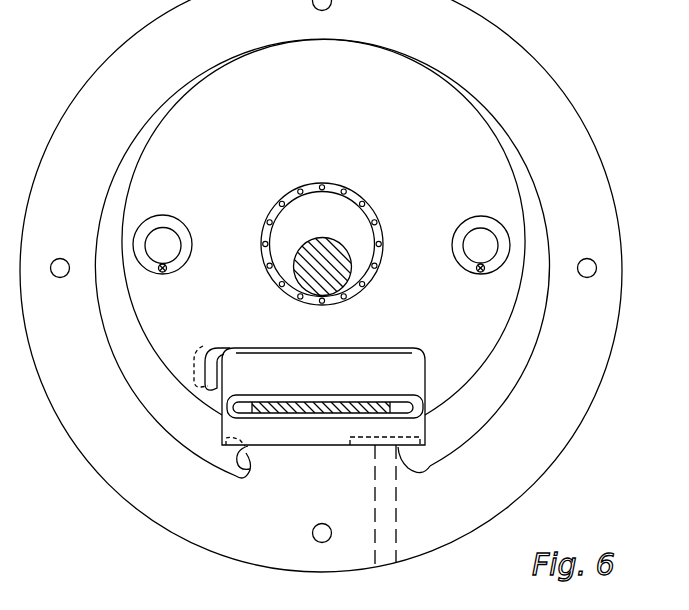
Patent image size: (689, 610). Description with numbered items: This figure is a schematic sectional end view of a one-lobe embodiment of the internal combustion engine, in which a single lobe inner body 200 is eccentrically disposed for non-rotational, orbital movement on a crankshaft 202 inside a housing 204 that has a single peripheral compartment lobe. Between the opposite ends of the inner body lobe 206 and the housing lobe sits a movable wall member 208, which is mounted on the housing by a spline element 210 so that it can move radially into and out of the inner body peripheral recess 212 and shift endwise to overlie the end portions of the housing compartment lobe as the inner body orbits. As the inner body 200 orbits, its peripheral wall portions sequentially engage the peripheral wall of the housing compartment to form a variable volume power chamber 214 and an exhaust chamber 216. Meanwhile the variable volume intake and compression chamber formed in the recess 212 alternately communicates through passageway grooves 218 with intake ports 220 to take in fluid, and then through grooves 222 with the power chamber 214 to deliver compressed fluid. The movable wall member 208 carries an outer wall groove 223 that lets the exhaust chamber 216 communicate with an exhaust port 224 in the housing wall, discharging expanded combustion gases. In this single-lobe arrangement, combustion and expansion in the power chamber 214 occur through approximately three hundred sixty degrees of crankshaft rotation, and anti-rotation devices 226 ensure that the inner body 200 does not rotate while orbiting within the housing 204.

The single lobe inner body 200 is at (340, 137).
The crankshaft 202 is at (363, 232).
The housing 204 is at (513, 37).
The inner body lobe 206 is at (458, 112).
The movable wall member 208 is at (306, 447).
The spline element 210 is at (323, 414).
The inner body peripheral recess 212 is at (350, 352).
The power chamber 214 is at (148, 421).
The exhaust chamber 216 is at (508, 382).
The passageway grooves 218 is at (214, 379).
The intake ports 220 is at (202, 346).
The grooves 222 is at (248, 470).
The outer wall groove 223 is at (355, 448).
The exhaust port 224 is at (396, 525).
The anti-rotation devices 226 is at (192, 238).